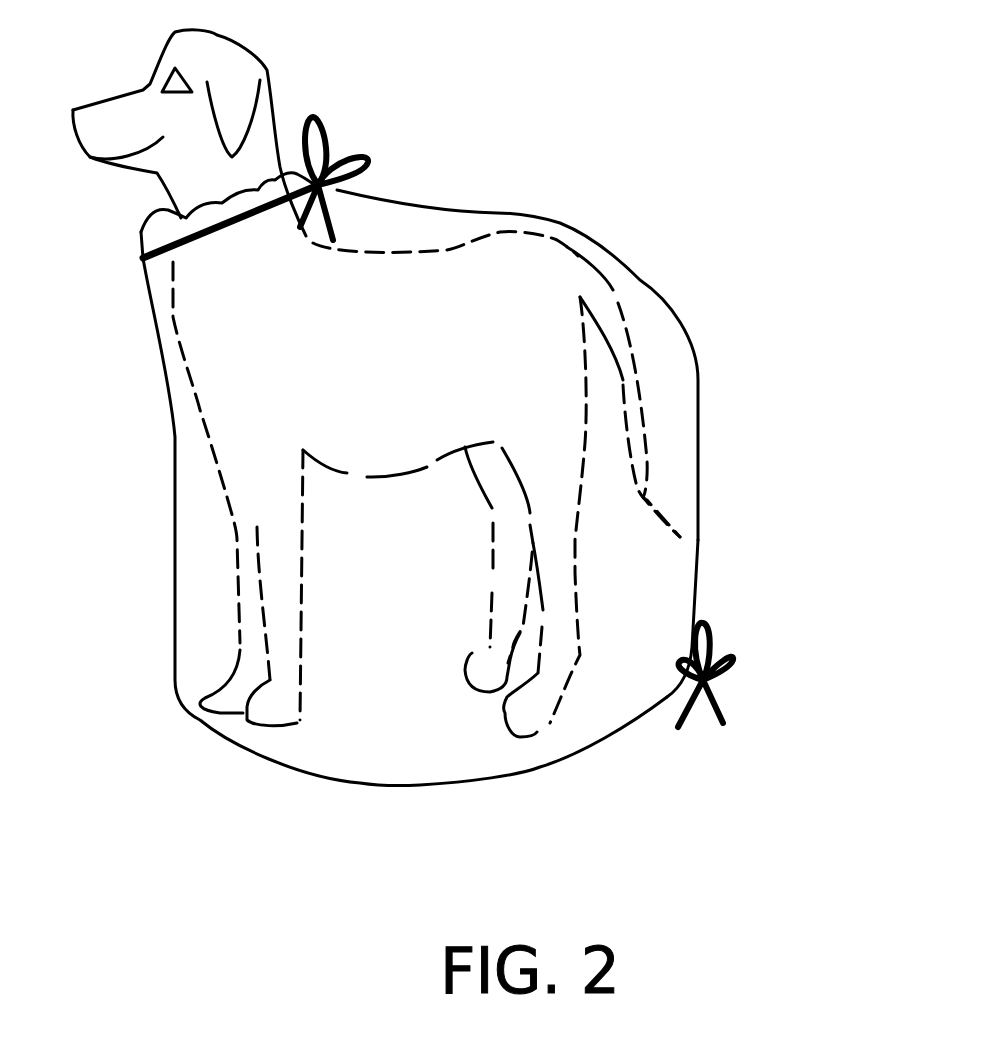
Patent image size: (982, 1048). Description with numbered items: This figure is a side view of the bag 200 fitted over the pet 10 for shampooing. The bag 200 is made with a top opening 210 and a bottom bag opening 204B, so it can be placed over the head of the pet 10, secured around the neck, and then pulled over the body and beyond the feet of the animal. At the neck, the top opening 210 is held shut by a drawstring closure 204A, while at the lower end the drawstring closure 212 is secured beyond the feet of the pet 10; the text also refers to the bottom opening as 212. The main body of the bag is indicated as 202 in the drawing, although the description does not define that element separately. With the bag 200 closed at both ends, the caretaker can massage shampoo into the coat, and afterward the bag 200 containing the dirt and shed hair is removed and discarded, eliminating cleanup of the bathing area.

The pet 10 is at (263, 130).
The bag 200 is at (673, 238).
The bag body 202 is at (510, 213).
The drawstring closure 204A is at (370, 160).
The bottom bag opening 204B is at (713, 653).
The top opening 210 is at (153, 227).
The drawstring closure 212 is at (713, 687).